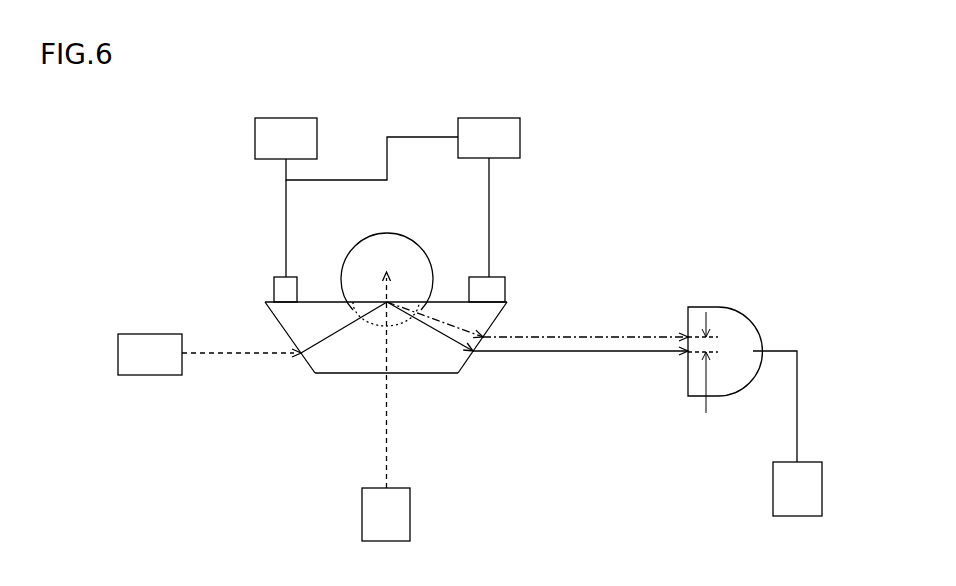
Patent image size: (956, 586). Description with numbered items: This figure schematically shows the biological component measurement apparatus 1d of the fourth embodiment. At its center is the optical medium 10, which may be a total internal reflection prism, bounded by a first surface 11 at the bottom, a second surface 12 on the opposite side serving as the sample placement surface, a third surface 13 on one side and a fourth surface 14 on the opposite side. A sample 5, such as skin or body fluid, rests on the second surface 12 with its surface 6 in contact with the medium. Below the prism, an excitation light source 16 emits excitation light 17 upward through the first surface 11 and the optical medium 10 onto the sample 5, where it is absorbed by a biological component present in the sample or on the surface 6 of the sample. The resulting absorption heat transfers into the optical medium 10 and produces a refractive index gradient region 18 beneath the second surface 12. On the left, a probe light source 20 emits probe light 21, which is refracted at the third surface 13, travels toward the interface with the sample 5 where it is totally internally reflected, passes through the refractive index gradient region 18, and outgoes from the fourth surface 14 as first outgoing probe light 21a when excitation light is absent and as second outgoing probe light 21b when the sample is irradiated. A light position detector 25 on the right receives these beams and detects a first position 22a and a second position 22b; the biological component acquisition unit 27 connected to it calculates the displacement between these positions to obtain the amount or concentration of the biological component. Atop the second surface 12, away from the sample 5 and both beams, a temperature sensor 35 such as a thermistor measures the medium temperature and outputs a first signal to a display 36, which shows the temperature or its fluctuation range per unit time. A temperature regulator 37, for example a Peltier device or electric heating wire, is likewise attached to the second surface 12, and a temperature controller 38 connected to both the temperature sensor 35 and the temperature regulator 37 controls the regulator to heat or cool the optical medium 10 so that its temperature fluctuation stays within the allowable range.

The biological component measurement apparatus 1d is at (797, 130).
The sample 5 is at (408, 237).
The surface of sample 6 is at (345, 310).
The optical medium 10 is at (325, 363).
The first surface 11 is at (437, 373).
The second surface 12 is at (452, 300).
The third surface 13 is at (272, 319).
The fourth surface 14 is at (509, 317).
The excitation light source 16 is at (410, 517).
The excitation light 17 is at (390, 442).
The refractive index gradient region 18 is at (370, 328).
The probe light source 20 is at (158, 334).
The probe light 21 is at (226, 356).
The first outgoing probe light 21a is at (605, 353).
The second outgoing probe light 21b is at (612, 336).
The first position 22a is at (686, 354).
The second position 22b is at (686, 336).
The light position detector 25 is at (707, 307).
The biological component acquisition unit 27 is at (773, 494).
The temperature sensor 35 is at (274, 290).
The display 36 is at (255, 134).
The temperature regulator 37 is at (506, 289).
The temperature controller 38 is at (521, 137).